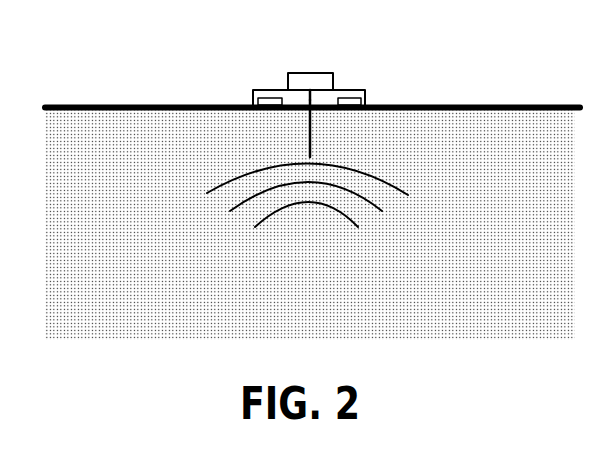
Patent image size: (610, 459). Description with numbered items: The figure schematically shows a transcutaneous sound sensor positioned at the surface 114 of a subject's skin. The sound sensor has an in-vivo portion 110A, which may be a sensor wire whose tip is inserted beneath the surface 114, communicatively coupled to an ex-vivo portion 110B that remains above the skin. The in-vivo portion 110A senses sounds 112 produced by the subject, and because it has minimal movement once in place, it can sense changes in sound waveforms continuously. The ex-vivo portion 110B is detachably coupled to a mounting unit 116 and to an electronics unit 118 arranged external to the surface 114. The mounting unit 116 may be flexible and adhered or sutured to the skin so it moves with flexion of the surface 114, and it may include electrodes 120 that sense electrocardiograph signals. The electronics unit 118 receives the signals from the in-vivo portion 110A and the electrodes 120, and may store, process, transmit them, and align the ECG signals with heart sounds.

The in-vivo portion 110A is at (313, 148).
The ex-vivo portion 110B is at (310, 100).
The sounds 112 is at (177, 202).
The surface 114 is at (112, 98).
The mounting unit 116 is at (362, 90).
The electronics unit 118 is at (309, 73).
The electrodes 120 is at (361, 100).